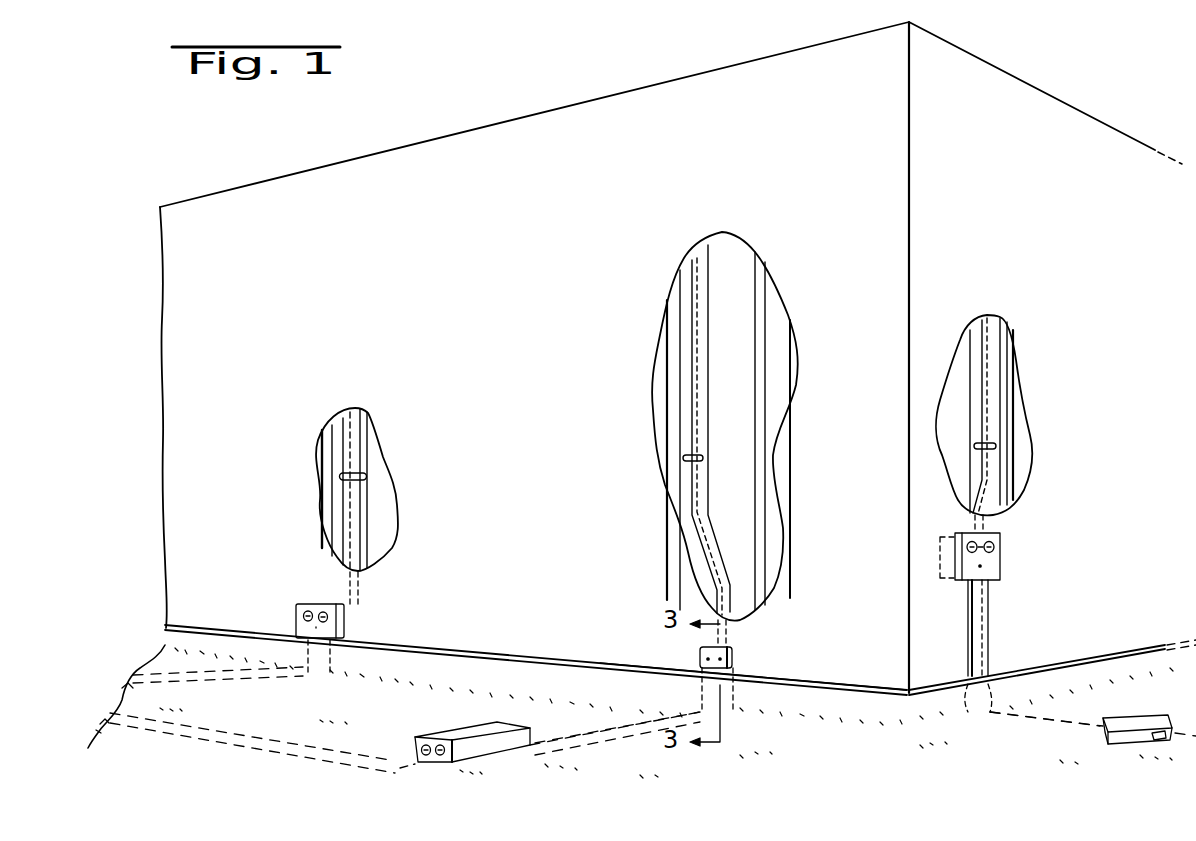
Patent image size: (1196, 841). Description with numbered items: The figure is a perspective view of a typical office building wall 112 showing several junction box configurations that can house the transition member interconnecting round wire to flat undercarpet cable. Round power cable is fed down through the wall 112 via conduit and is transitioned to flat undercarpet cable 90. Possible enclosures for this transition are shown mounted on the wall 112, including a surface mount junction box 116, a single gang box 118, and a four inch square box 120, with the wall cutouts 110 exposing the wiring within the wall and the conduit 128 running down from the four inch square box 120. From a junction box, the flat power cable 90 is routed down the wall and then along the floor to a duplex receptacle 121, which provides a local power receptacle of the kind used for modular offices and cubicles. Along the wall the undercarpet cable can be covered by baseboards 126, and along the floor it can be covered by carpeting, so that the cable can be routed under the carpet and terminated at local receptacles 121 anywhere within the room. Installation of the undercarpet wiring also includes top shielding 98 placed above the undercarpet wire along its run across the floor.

The wall 112 is at (530, 253).
The wall panel / door opening 110 is at (781, 332).
The surface mount junction box 116 is at (300, 622).
The single gang box 118 is at (732, 662).
The four inch square box 120 is at (998, 568).
The baseboards 126 is at (843, 702).
The conduit 128 is at (989, 637).
The duplex receptacle 121 is at (450, 730).
The flat undercarpet cable 90 is at (568, 726).
The top shielding 98 is at (1048, 729).